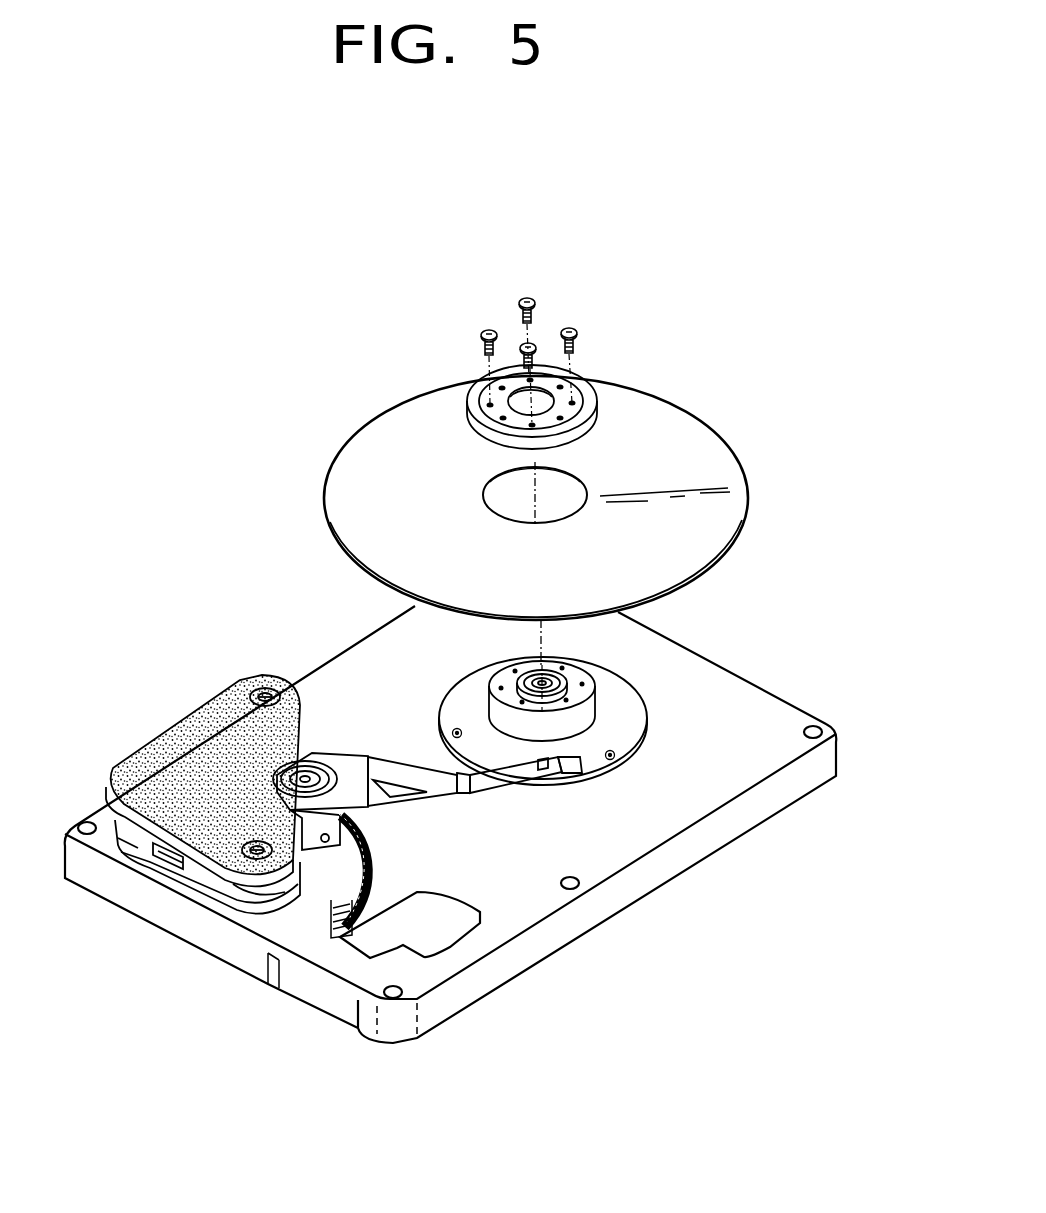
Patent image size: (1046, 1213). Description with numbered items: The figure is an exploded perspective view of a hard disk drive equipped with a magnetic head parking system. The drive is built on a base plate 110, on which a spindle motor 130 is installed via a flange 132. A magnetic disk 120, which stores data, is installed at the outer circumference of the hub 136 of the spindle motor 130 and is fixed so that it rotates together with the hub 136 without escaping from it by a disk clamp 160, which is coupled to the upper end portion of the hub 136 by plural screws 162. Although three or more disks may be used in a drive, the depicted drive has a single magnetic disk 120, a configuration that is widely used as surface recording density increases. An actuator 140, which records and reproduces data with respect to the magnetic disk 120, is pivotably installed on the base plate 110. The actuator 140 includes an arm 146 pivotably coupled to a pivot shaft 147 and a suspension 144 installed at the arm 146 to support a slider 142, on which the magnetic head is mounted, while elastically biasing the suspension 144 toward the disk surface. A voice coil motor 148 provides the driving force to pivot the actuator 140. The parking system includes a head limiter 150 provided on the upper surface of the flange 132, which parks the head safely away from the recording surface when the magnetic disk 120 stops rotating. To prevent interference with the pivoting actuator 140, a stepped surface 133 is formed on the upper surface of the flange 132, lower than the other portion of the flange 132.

The base plate 110 is at (790, 793).
The magnetic disk 120 is at (697, 443).
The spindle motor 130 is at (543, 694).
The flange 132 is at (627, 723).
The stepped surface 133 is at (611, 759).
The hub 136 is at (600, 710).
The actuator 140 is at (371, 816).
The slider 142 is at (568, 768).
The suspension 144 is at (465, 772).
The arm 146 is at (413, 797).
The pivot shaft 147 is at (213, 714).
The voice coil motor 148 is at (203, 874).
The head limiter 150 is at (545, 772).
The disk clamp 160 is at (587, 393).
The screws 162 is at (487, 333).